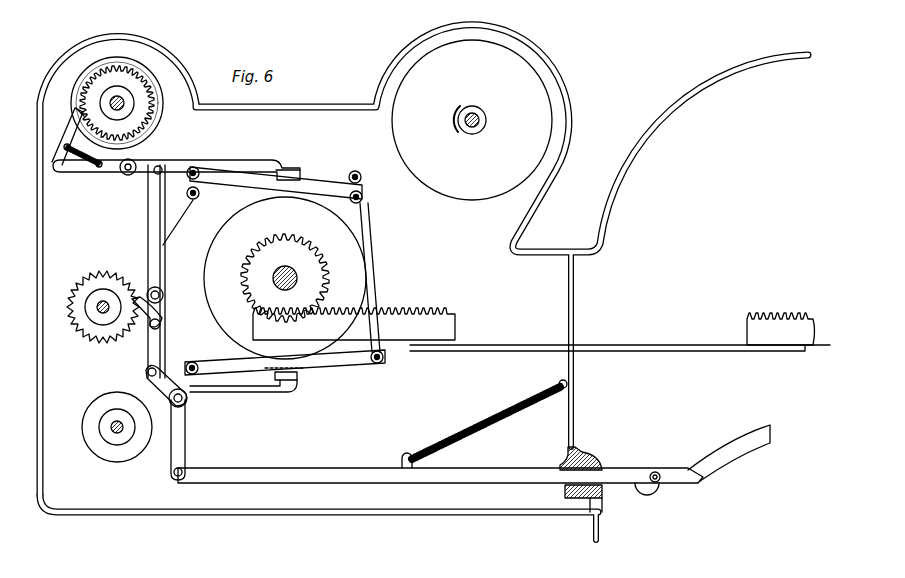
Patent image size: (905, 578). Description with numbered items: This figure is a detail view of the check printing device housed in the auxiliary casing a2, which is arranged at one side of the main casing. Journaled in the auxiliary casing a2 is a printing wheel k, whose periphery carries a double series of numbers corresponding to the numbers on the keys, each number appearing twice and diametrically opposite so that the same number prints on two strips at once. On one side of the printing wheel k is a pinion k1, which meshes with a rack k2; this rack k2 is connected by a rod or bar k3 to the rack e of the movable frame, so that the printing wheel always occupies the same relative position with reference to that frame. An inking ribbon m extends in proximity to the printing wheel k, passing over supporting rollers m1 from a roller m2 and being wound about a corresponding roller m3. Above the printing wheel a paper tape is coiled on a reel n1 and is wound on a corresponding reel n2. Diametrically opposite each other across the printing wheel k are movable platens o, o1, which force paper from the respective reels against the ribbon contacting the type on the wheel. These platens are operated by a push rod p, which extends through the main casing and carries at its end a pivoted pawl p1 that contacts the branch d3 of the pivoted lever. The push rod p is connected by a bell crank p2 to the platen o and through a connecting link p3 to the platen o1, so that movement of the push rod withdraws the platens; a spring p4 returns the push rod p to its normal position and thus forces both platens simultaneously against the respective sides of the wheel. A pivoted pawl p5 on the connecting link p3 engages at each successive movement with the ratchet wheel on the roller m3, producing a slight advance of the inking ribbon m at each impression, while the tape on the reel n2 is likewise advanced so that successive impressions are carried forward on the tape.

The auxiliary casing a2 is at (424, 282).
The reel n1 is at (476, 116).
The reel n2 is at (120, 100).
The printing wheel k is at (338, 240).
The pinion k1 is at (312, 282).
The rack k2 is at (417, 327).
The rod or bar k3 is at (515, 346).
The rack e is at (781, 329).
The inking ribbon m is at (150, 252).
The supporting rollers m1 is at (194, 200).
The roller m2 is at (110, 450).
The roller m3 is at (85, 306).
The movable platen o is at (290, 384).
The movable platen o1 is at (294, 168).
The push rod p is at (53, 160).
The pivoted pawl p1 is at (670, 470).
The bell crank p2 is at (188, 404).
The connecting link p3 is at (163, 265).
The spring p4 is at (487, 415).
The pivoted pawl p5 is at (142, 338).
The branch d3 is at (742, 432).